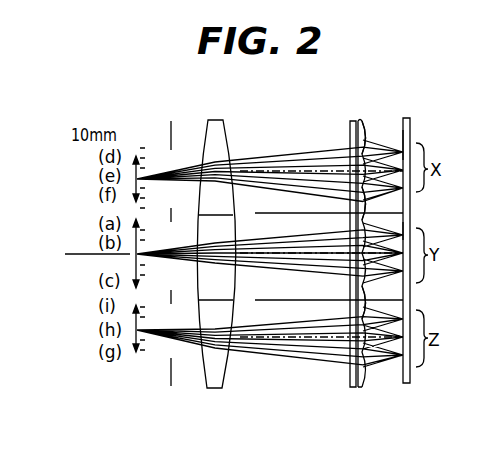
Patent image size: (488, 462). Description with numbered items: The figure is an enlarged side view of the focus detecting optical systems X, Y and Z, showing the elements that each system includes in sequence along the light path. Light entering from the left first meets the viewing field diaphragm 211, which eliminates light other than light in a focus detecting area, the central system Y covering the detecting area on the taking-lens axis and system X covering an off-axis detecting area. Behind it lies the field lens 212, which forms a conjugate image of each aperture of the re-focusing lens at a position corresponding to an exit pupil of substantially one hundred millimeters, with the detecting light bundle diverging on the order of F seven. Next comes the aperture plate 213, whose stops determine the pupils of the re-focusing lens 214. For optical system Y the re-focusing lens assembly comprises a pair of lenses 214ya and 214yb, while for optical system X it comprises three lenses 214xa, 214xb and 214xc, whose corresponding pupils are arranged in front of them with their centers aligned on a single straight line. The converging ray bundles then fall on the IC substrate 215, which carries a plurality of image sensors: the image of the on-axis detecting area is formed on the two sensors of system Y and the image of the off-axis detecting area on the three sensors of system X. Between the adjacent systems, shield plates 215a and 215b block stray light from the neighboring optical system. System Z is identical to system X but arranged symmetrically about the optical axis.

The viewing field diaphragm 211 is at (171, 380).
The field lens 212 is at (214, 388).
The aperture plate 213 is at (350, 380).
The re-focusing lens 214 is at (362, 387).
The re-focusing lens of optical system X 214xa is at (366, 132).
The re-focusing lens of optical system X 214xb is at (410, 140).
The re-focusing lens of optical system X 214xc is at (368, 196).
The re-focusing lens of optical system Y 214ya is at (410, 232).
The re-focusing lens of optical system Y 214yb is at (368, 290).
The IC substrate 215 is at (408, 384).
The shield plate 215a is at (255, 213).
The shield plate 215b is at (255, 300).